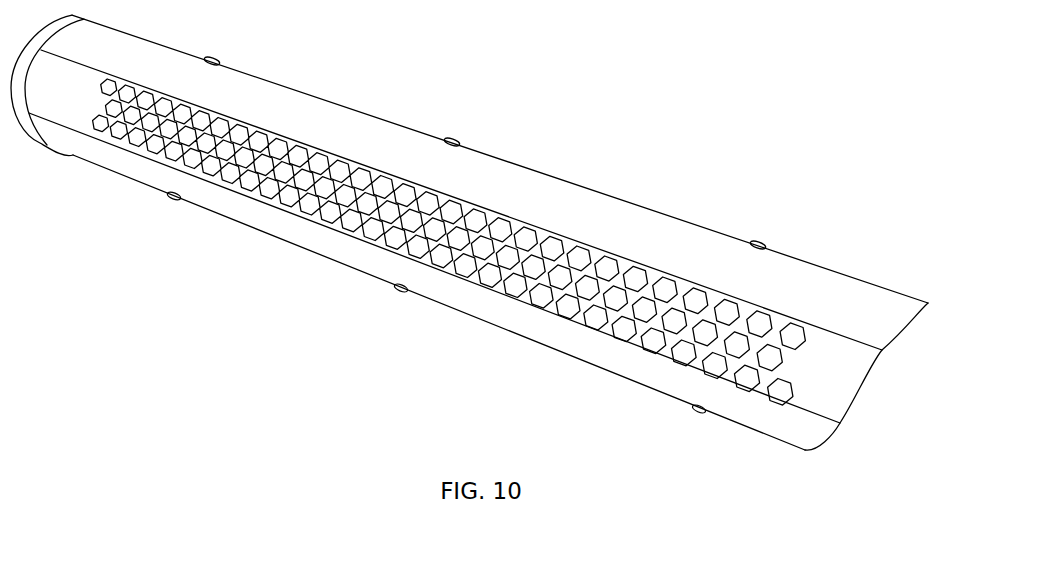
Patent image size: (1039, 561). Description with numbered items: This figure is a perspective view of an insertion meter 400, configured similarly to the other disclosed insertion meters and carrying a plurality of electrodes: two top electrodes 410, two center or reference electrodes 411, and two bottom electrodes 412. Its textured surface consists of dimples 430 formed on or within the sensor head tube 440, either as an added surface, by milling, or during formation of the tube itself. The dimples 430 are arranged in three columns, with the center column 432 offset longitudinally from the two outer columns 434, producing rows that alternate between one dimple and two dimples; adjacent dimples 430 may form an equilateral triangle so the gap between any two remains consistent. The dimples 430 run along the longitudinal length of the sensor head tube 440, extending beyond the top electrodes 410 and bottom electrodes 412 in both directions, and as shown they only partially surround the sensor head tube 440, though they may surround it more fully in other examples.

The insertion meter 400 is at (605, 196).
The top electrodes 410 is at (758, 241).
The center or reference electrodes 411 is at (453, 138).
The bottom electrodes 412 is at (213, 57).
The dimples 430 is at (467, 206).
The center column 432 is at (786, 366).
The outer columns 434 is at (798, 394).
The sensor head tube 440 is at (358, 119).